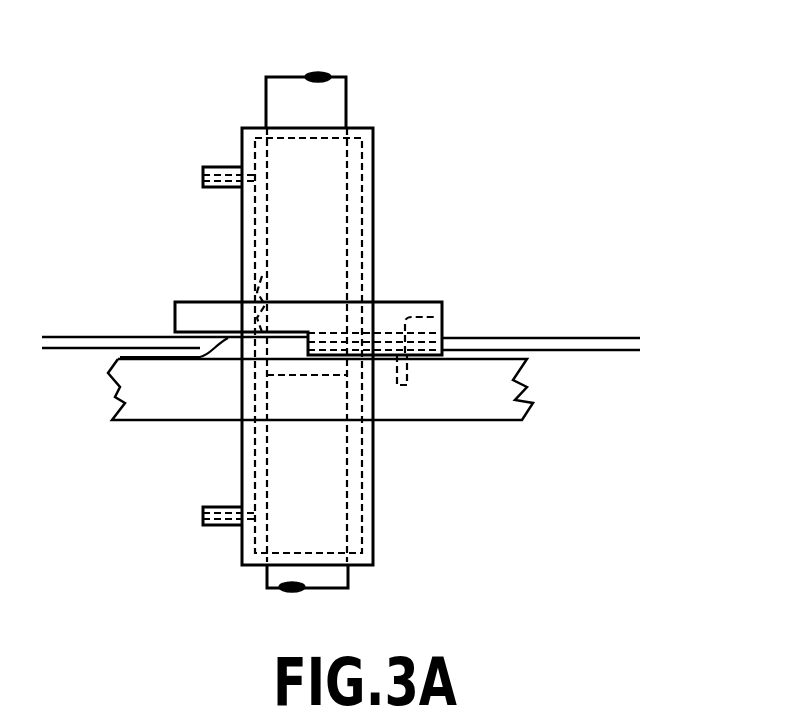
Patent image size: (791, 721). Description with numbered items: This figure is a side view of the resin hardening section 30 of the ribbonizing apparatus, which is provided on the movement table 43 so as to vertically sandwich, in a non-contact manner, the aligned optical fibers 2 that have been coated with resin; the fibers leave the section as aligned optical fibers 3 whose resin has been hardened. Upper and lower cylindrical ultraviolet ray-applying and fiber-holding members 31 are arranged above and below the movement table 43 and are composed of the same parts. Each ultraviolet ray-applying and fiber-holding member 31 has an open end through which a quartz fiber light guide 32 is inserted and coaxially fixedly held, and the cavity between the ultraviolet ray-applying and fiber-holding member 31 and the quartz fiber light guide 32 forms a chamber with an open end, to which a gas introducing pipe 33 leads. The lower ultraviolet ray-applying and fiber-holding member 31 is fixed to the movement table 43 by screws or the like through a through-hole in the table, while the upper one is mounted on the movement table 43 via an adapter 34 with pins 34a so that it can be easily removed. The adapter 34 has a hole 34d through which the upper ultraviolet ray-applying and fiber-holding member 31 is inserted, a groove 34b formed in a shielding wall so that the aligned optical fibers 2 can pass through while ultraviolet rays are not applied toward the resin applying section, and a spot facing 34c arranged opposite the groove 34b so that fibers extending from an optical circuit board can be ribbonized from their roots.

The resin hardening section 30 is at (612, 174).
The ultraviolet ray-applying and fiber-holding member 31 is at (375, 160).
The quartz fiber light guide 32 is at (337, 103).
The gas introducing pipe 33 is at (203, 167).
The adapter 34 is at (417, 302).
The pin 34a is at (407, 385).
The groove 34b is at (442, 318).
The spot facing 34c is at (120, 357).
The hole 34d is at (258, 282).
The aligned optical fibers coated with resin and hardened 3 is at (62, 337).
The aligned optical fibers 2 is at (597, 338).
The movement table 43 is at (537, 405).